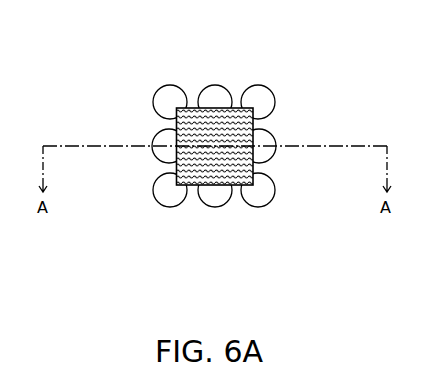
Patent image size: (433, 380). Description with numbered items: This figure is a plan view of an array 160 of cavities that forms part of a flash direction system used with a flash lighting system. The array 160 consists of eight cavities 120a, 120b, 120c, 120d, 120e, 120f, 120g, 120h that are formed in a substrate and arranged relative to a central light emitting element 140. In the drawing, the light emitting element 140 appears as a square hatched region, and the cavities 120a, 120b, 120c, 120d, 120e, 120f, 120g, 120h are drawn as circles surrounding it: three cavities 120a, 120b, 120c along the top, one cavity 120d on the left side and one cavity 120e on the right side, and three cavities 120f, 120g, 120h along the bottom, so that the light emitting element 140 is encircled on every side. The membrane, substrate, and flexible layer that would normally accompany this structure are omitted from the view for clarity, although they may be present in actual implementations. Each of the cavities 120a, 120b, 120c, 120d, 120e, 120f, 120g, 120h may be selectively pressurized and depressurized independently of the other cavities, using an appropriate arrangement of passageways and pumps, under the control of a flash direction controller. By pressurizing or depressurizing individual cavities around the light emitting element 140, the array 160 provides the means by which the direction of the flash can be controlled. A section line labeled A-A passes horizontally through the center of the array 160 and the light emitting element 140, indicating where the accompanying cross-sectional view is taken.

The cavity 120a is at (163, 85).
The cavity 120b is at (213, 85).
The cavity 120c is at (260, 86).
The cavity 120d is at (155, 137).
The cavity 120e is at (275, 133).
The cavity 120f is at (163, 205).
The cavity 120g is at (213, 205).
The cavity 120h is at (260, 205).
The light emitting element 140 is at (177, 168).
The array 160 is at (236, 132).